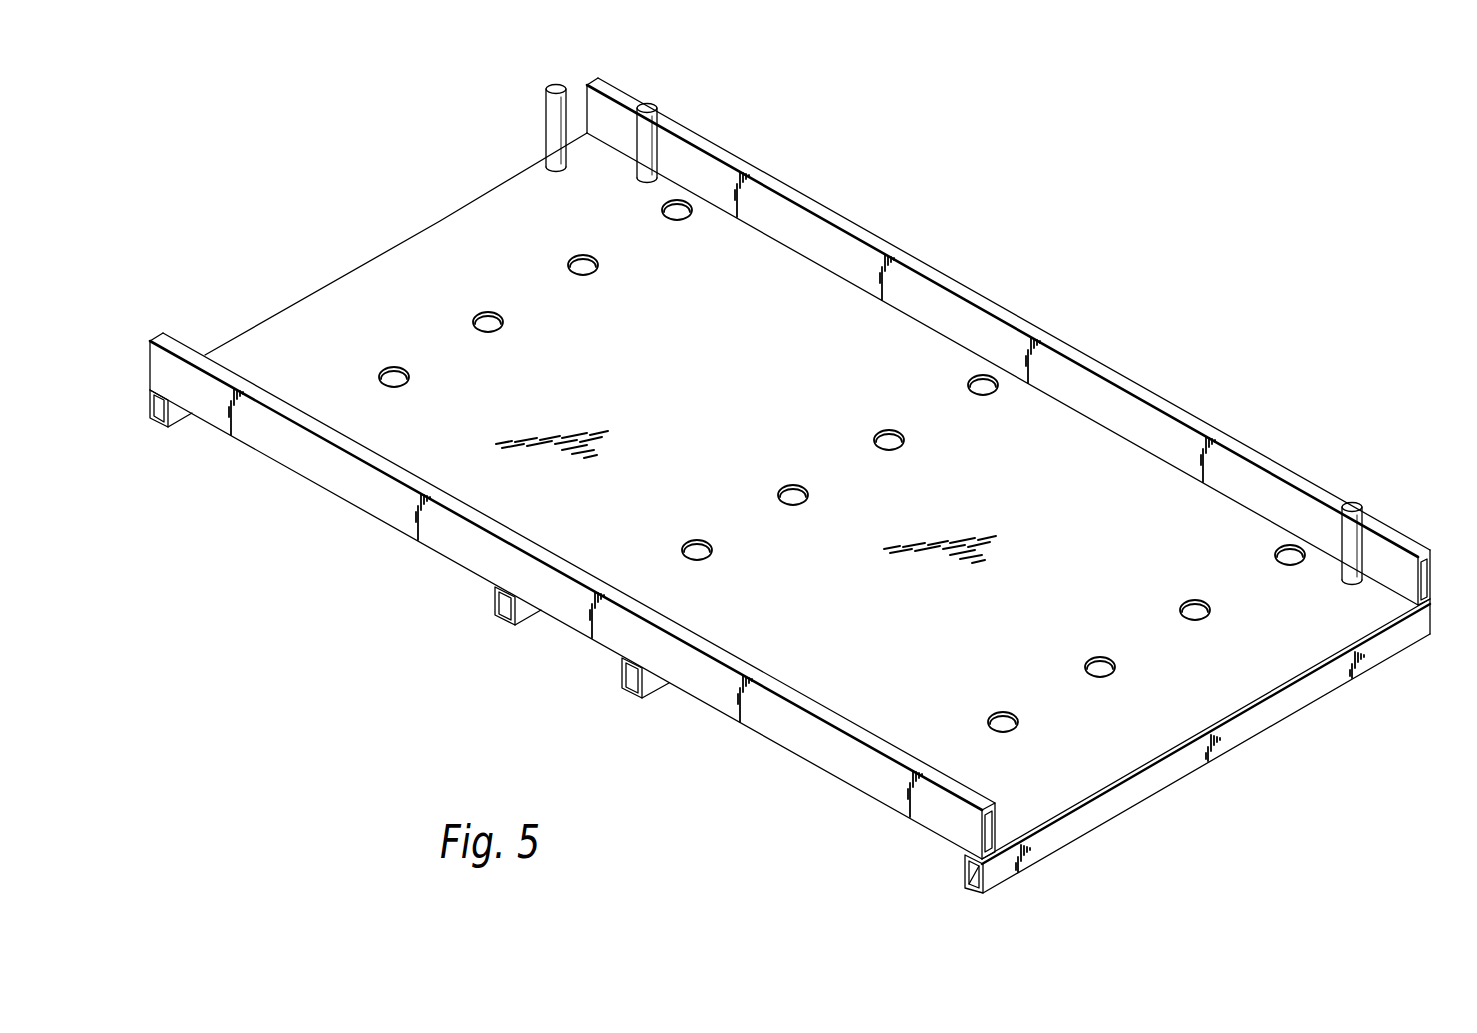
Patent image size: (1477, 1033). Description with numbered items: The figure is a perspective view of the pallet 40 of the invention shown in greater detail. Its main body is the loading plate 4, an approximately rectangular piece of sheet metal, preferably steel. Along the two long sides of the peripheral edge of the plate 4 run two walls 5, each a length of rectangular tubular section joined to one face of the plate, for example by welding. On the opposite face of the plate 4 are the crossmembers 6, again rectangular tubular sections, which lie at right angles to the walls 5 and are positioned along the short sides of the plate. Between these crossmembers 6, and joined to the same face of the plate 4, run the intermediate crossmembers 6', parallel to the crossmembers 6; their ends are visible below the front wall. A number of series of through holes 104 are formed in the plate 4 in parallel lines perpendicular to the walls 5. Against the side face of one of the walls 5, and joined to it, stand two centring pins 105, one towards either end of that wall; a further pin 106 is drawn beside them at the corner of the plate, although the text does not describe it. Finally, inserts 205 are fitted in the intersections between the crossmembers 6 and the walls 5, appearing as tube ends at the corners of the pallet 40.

The loading plate 4 is at (1118, 468).
The walls 5 is at (1258, 458).
The crossmembers 6 is at (790, 641).
The intermediate crossmembers 6' is at (585, 674).
The pallet 40 is at (349, 270).
The through holes 104 is at (496, 327).
The centring pins 105 is at (650, 144).
The post 106 is at (550, 112).
The inserts 205 is at (495, 586).